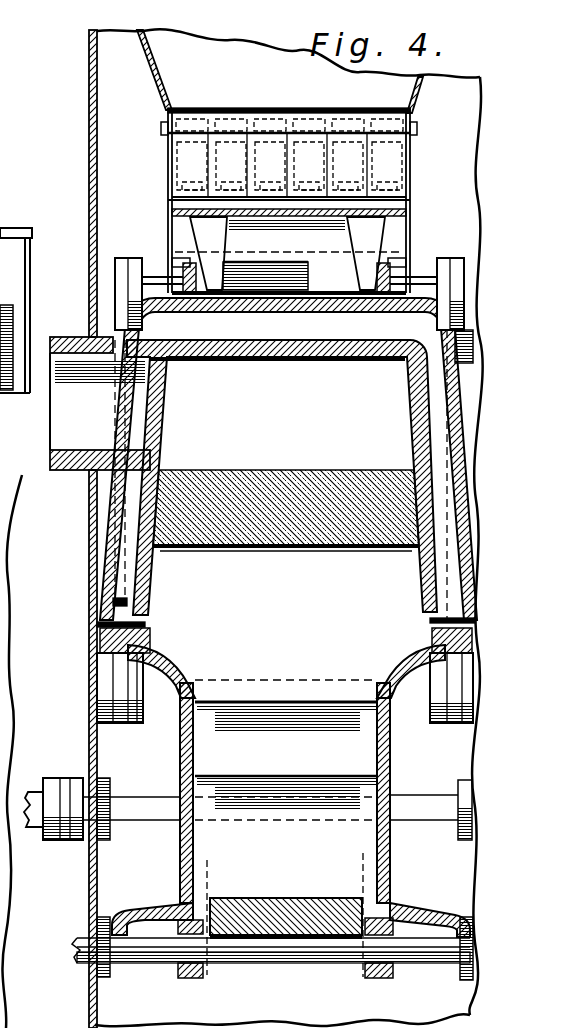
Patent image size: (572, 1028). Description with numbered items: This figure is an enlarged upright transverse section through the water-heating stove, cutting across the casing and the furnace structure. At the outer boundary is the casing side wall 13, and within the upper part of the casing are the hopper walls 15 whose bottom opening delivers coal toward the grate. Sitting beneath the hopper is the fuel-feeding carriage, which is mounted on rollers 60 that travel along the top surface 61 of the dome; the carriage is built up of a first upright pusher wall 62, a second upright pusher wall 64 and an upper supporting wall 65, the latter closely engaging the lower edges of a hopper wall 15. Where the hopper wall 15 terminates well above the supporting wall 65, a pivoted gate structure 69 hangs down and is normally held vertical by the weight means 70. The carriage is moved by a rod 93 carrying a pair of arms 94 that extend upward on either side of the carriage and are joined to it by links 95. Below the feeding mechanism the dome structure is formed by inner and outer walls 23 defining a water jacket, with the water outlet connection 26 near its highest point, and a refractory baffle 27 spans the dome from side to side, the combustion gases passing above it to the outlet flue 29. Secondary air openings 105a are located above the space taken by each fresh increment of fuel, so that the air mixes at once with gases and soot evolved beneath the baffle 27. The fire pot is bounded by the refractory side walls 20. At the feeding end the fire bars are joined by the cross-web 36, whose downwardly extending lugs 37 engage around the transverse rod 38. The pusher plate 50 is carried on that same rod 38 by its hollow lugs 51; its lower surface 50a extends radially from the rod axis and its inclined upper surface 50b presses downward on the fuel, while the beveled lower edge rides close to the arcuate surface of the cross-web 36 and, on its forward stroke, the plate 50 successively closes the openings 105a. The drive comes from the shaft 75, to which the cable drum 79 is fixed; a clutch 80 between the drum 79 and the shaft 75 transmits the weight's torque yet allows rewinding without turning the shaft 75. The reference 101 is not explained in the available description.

The side wall 13 is at (97, 607).
The hopper walls 15 is at (157, 64).
The refractory side walls 20 is at (182, 758).
The inner and outer walls 23 is at (143, 552).
The water outlet connection 26 is at (440, 353).
The refractory baffle 27 is at (290, 540).
The outlet flue 29 is at (72, 457).
The cross-web 36 is at (292, 905).
The lugs 37 is at (216, 958).
The rod 38 is at (80, 938).
The pusher plate 50 is at (220, 870).
The lower surface 50a is at (286, 825).
The upper surface 50b is at (287, 735).
The hollow lugs 51 is at (185, 977).
The rollers 60 is at (402, 245).
The top surface 61 is at (187, 296).
The first upright pusher wall 62 is at (307, 294).
The second upright pusher wall 64 is at (289, 253).
The upper supporting wall 65 is at (172, 212).
The pivoted gate structure 69 is at (305, 152).
The weight means 70 is at (405, 156).
The shaft 75 is at (157, 812).
The drum 79 is at (35, 825).
The clutch 80 is at (70, 777).
The rod 93 is at (163, 694).
The arms 94 is at (118, 291).
The links 95 is at (133, 262).
The chamber 101 is at (295, 372).
The secondary air openings 105a is at (195, 690).